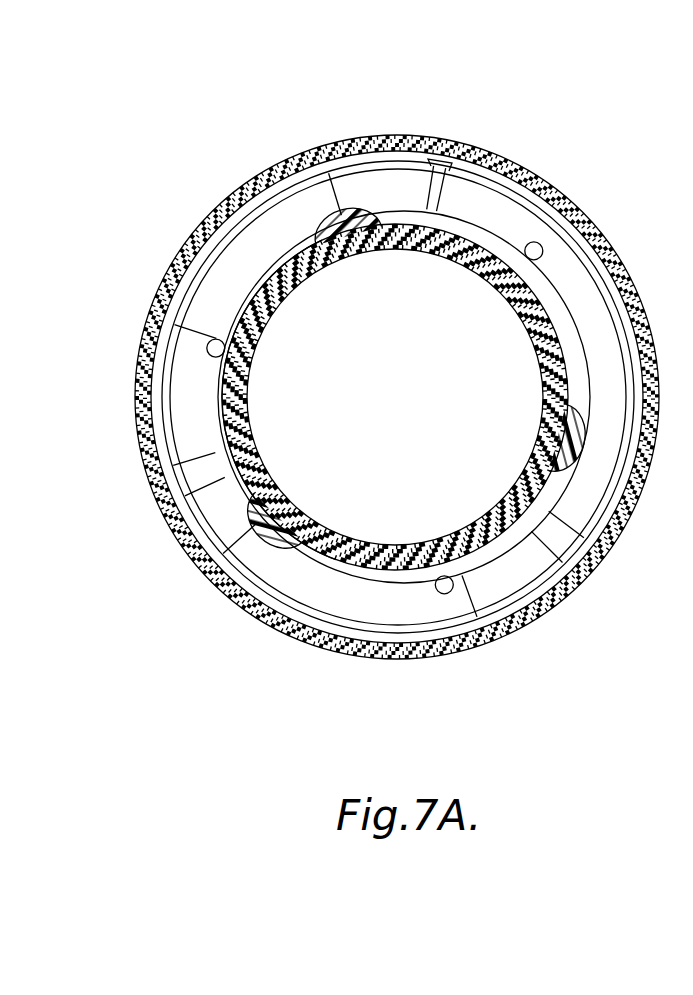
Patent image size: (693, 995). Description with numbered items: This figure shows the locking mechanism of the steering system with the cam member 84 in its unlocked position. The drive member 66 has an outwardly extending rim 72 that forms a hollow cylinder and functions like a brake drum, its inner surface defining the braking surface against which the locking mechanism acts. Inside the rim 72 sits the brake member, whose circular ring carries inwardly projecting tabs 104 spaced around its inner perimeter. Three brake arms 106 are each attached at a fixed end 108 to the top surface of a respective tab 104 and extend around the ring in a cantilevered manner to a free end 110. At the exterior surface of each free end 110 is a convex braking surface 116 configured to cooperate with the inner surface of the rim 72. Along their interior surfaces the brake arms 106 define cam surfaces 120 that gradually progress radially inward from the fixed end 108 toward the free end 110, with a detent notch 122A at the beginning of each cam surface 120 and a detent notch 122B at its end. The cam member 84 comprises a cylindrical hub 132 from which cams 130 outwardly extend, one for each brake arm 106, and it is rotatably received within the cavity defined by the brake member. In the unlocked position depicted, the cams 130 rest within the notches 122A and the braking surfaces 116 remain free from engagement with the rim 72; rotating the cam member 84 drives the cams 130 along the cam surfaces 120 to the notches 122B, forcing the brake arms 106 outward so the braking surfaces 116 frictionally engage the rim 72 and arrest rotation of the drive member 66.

The first drive member 66 is at (563, 195).
The rim 72 is at (437, 658).
The first cam member 84 is at (455, 228).
The tab 104 is at (367, 167).
The brake arm 106 is at (207, 293).
The fixed end 108 is at (400, 195).
The free end 110 is at (182, 437).
The braking surface 116 is at (160, 410).
The cam surface 120 is at (250, 207).
The detent notch 122A is at (332, 207).
The detent notch 122B is at (207, 342).
The cam 130 is at (283, 243).
The cylindrical hub 132 is at (330, 545).